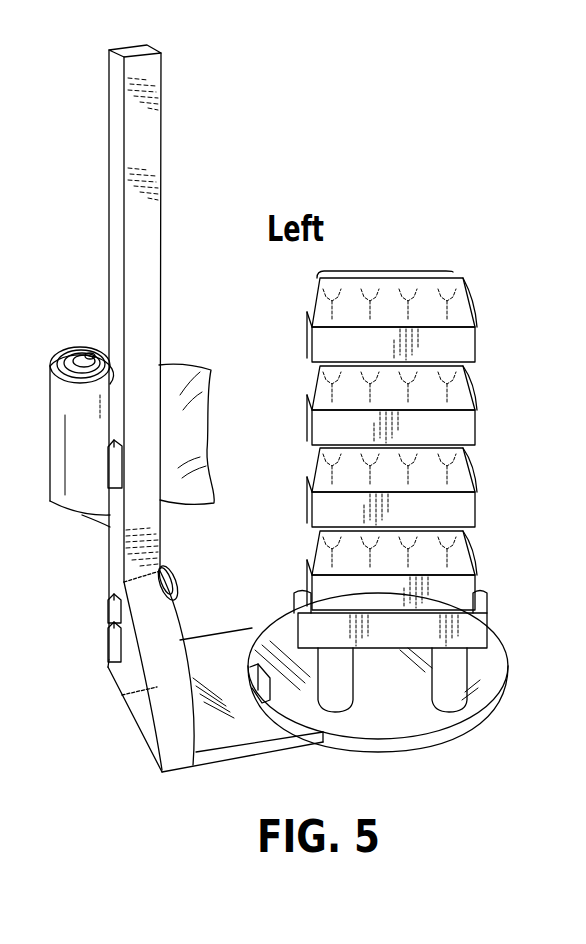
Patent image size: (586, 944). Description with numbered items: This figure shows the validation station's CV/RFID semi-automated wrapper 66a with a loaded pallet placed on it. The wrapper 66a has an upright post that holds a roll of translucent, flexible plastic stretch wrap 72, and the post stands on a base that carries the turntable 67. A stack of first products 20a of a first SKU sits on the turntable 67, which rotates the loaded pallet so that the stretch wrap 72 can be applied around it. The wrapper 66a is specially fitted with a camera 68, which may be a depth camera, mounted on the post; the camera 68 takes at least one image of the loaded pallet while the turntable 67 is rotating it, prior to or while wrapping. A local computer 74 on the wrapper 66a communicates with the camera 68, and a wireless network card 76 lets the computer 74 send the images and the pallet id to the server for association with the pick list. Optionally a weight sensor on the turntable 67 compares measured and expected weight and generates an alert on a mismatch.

The CV/RFID semi-automated wrapper 66a is at (216, 92).
The stretch wrap 72 is at (66, 346).
The wireless network card 76 is at (107, 606).
The local computer 74 is at (107, 640).
The camera 68 is at (178, 583).
The turntable 67 is at (492, 675).
The first product 20a is at (475, 347).